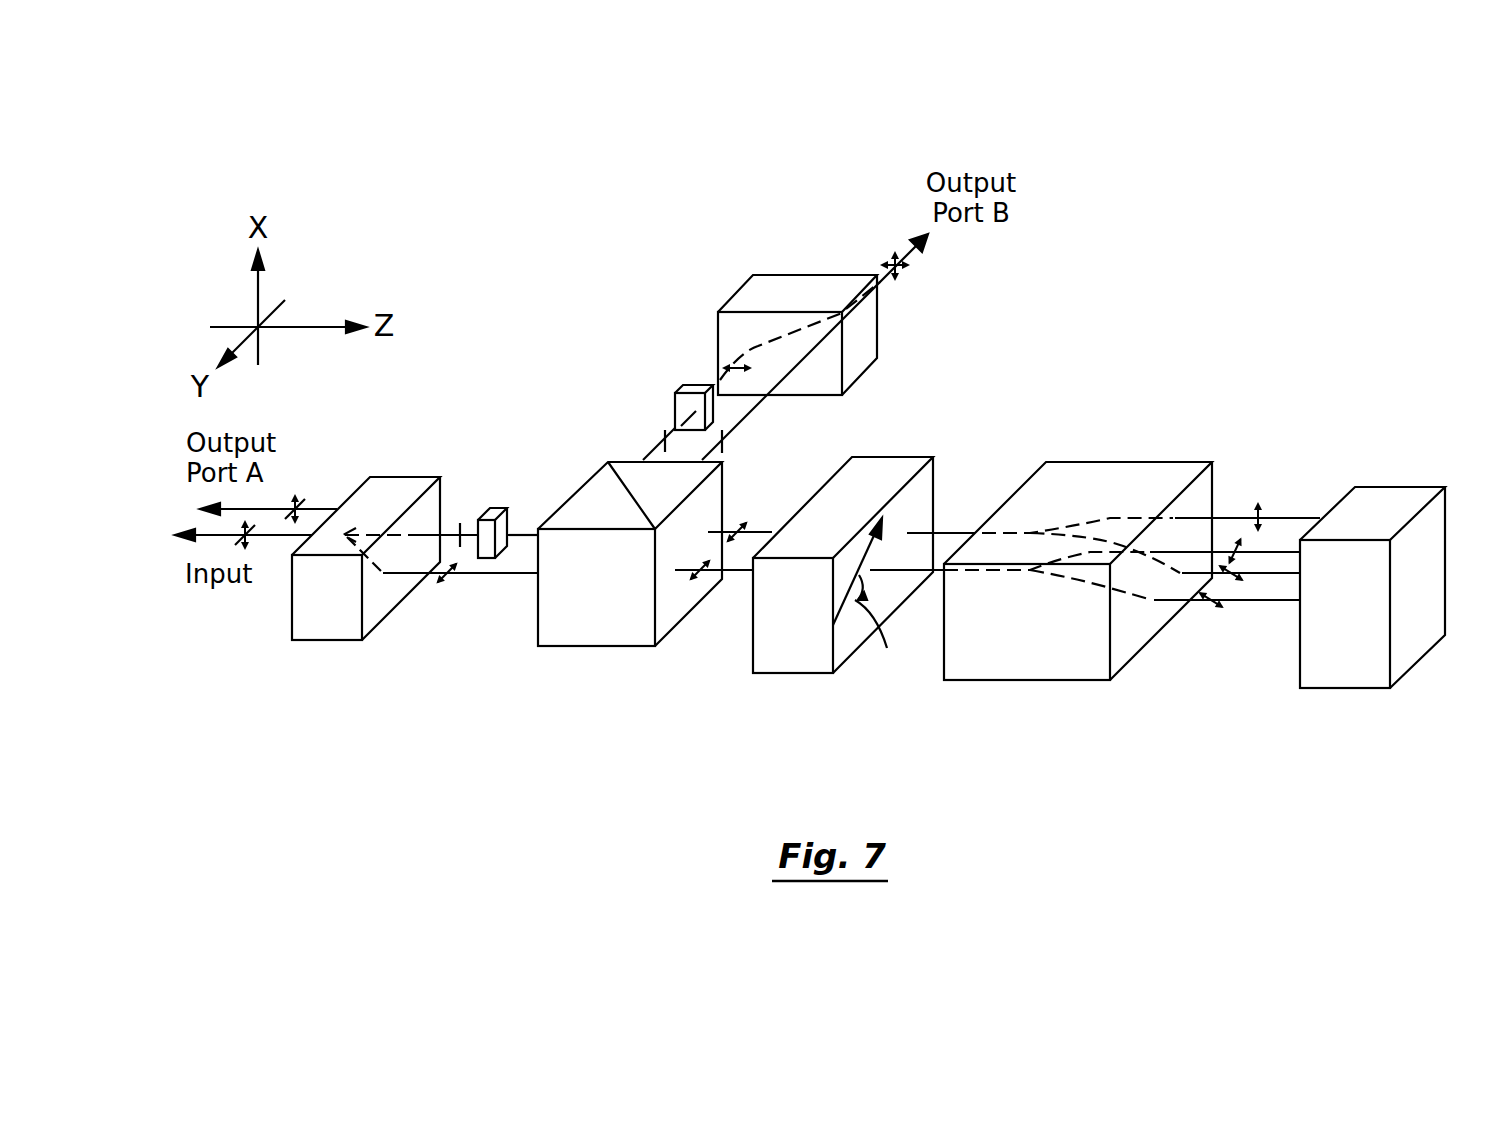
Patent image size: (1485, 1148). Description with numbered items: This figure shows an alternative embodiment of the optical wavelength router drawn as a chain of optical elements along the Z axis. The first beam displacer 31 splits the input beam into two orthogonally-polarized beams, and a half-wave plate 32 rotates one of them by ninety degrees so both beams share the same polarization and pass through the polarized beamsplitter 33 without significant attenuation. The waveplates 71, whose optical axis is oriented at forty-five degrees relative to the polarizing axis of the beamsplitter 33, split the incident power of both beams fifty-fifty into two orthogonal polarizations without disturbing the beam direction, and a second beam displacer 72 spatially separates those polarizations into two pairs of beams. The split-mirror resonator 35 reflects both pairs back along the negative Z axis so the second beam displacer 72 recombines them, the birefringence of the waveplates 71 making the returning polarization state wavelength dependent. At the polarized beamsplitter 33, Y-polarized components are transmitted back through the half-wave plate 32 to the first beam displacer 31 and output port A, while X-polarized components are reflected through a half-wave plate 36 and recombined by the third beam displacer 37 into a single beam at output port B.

The first beam displacer 31 is at (396, 490).
The half-wave plate 32 is at (518, 518).
The polarized beamsplitter 33 is at (600, 632).
The split-mirror resonator 35 is at (1375, 508).
The half-wave plate 36 is at (675, 400).
The third beam displacer 37 is at (730, 330).
The waveplates 71 is at (925, 487).
The second beam displacer 72 is at (1133, 483).